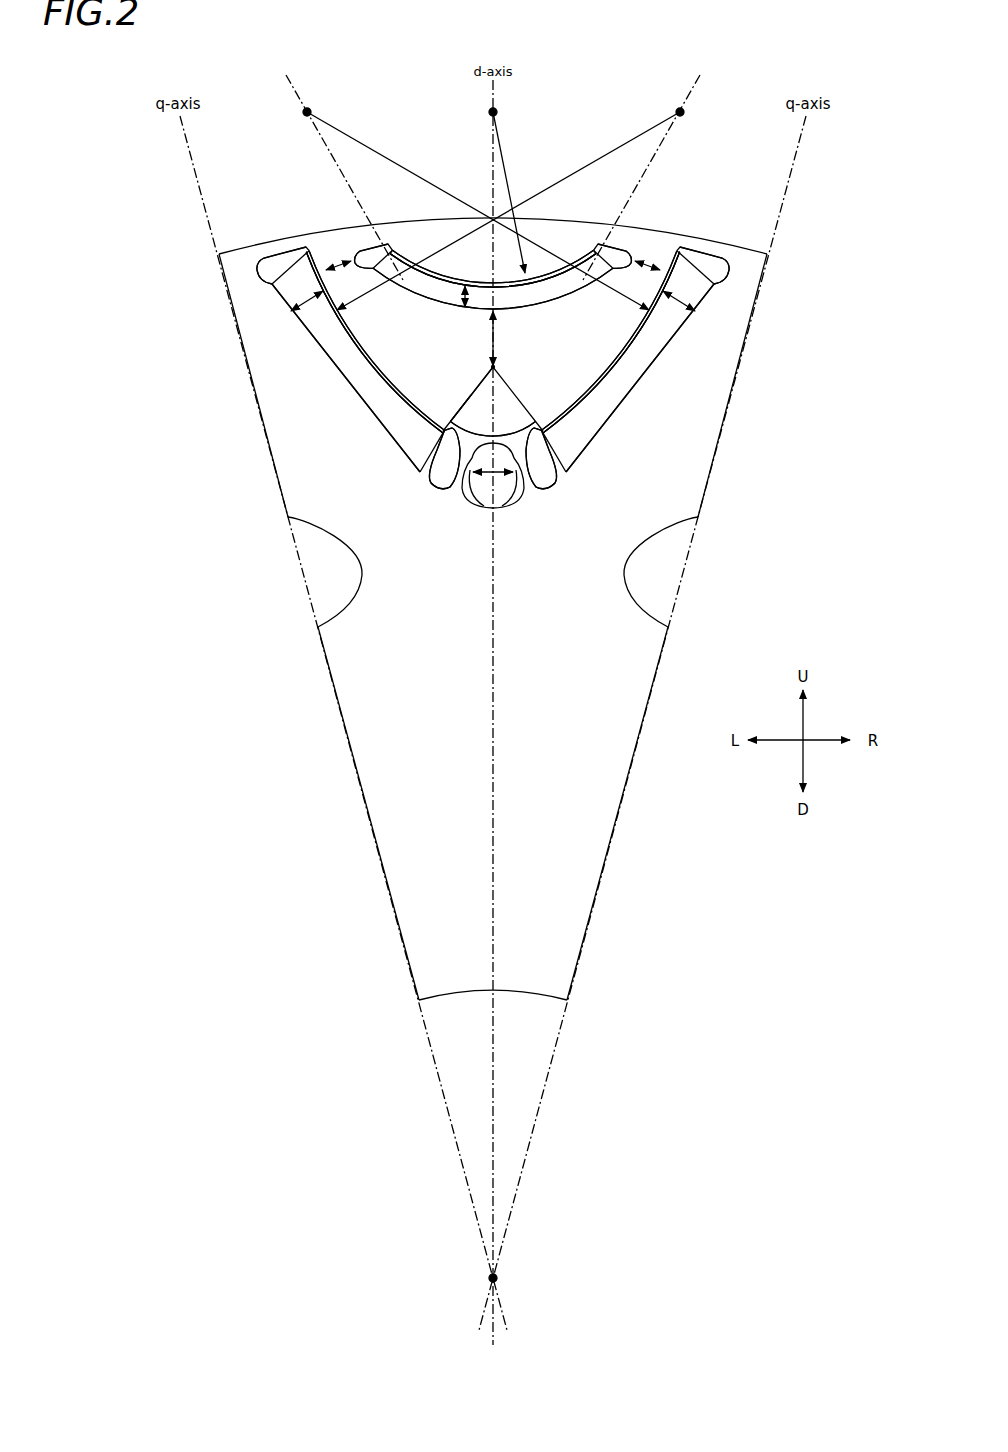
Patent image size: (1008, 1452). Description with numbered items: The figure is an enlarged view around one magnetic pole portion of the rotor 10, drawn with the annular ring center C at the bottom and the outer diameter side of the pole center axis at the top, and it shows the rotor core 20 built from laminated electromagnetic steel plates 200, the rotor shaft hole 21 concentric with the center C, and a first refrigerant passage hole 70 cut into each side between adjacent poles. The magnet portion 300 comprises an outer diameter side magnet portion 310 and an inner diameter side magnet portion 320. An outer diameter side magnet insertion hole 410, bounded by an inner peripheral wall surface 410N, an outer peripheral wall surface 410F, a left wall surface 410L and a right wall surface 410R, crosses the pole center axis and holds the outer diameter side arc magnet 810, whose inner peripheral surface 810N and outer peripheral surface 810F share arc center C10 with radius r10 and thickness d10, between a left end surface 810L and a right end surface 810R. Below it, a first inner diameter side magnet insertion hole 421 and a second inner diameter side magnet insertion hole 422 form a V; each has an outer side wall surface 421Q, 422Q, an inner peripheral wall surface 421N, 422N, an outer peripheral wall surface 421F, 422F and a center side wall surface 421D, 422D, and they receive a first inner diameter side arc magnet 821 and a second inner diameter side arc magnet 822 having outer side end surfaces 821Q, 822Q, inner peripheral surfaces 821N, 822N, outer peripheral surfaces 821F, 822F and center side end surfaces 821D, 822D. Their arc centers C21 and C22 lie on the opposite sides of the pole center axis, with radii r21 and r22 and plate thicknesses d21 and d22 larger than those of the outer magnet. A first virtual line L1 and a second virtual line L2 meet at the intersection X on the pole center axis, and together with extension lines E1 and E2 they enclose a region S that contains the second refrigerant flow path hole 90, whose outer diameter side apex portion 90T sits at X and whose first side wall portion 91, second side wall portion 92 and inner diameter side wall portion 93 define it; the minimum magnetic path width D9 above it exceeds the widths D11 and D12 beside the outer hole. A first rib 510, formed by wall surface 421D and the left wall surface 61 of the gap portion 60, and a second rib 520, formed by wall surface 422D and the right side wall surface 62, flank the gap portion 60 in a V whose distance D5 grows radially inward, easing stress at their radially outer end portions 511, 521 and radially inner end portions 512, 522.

The rotor 10 is at (822, 250).
The rotor core 20 is at (493, 609).
The electromagnetic steel plate 200 is at (493, 609).
The rotor shaft hole 21 is at (540, 1085).
The first refrigerant passage hole 70 is at (333, 581).
The magnet portion 300 is at (496, 362).
The outer diameter side magnet portion 310 is at (495, 232).
The inner diameter side magnet portion 320 is at (496, 386).
The outer diameter side magnet insertion hole 410 is at (488, 247).
The inner peripheral wall surface 410N is at (488, 276).
The outer peripheral wall surface 410F is at (418, 293).
The left wall surface 410L is at (364, 251).
The right wall surface 410R is at (622, 251).
The outer diameter side arc magnet 810 is at (488, 281).
The inner peripheral surface 810N is at (402, 247).
The outer peripheral surface 810F is at (570, 275).
The left end surface 810L is at (393, 246).
The right end surface 810R is at (590, 247).
The first inner diameter side magnet insertion hole 421 is at (348, 325).
The second inner diameter side magnet insertion hole 422 is at (640, 325).
The first inner diameter side arc magnet 821 is at (398, 450).
The second inner diameter side arc magnet 822 is at (588, 450).
The q-axis side wall surface 421Q is at (264, 258).
The q-axis side wall surface 422Q is at (722, 258).
The q-axis side end surface 821Q is at (258, 272).
The q-axis side end surface 822Q is at (728, 272).
The inner peripheral wall surface 421N is at (352, 352).
The inner peripheral wall surface 422N is at (634, 352).
The inner peripheral surface 821N is at (356, 338).
The inner peripheral surface 822N is at (630, 338).
The outer peripheral wall surface 421F is at (377, 422).
The outer peripheral wall surface 422F is at (609, 422).
The outer peripheral surface 821F is at (350, 406).
The outer peripheral surface 822F is at (636, 406).
The d-axis side wall surface 421D is at (444, 486).
The d-axis side wall surface 422D is at (545, 486).
The d-axis side end surface 821D is at (430, 460).
The d-axis side end surface 822D is at (558, 460).
The first rib 510 is at (452, 490).
The radially outer end portion 511 is at (436, 478).
The radially inner end portion 512 is at (448, 492).
The second rib 520 is at (534, 490).
The radially outer end portion 521 is at (550, 478).
The radially inner end portion 522 is at (538, 492).
The gap portion 60 is at (496, 519).
The left wall surface 61 is at (478, 500).
The right side wall surface 62 is at (508, 500).
The second refrigerant flow path hole 90 is at (496, 382).
The outer diameter side apex portion 90T is at (490, 367).
The first side wall portion 91 is at (474, 391).
The second side wall portion 92 is at (512, 396).
The inner diameter side wall portion 93 is at (521, 428).
The region S is at (459, 411).
The intersection X is at (502, 366).
The annular ring center C is at (497, 1277).
The arc center C10 is at (497, 111).
The arc center C21 is at (676, 110).
The arc center C22 is at (312, 110).
The arc radius r10 is at (503, 148).
The arc radius r21 is at (641, 134).
The arc radius r22 is at (345, 134).
The first virtual line L1 is at (686, 96).
The second virtual line L2 is at (300, 96).
The first extension line E1 is at (297, 218).
The second extension line E2 is at (689, 218).
The minimum width D11 is at (338, 263).
The minimum width D12 is at (648, 263).
The plate thickness d21 is at (308, 303).
The plate thickness d22 is at (678, 303).
The plate thickness d10 is at (463, 307).
The minimum width D9 is at (490, 340).
The distance D5 is at (490, 478).